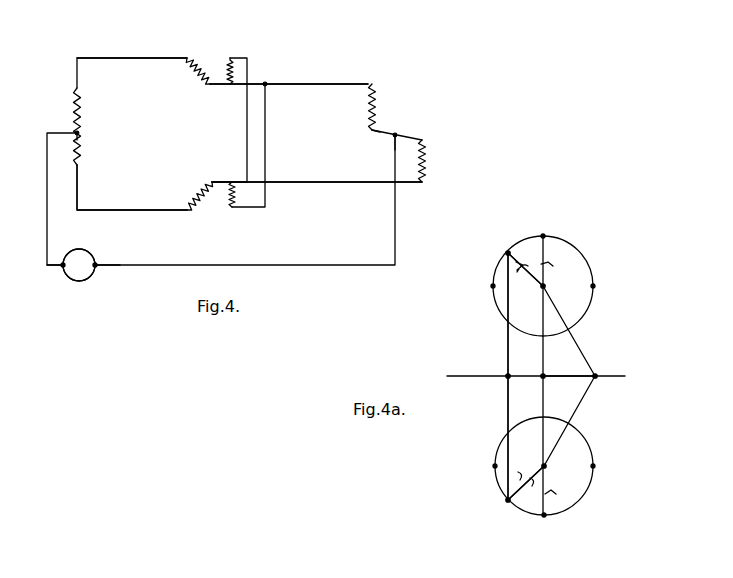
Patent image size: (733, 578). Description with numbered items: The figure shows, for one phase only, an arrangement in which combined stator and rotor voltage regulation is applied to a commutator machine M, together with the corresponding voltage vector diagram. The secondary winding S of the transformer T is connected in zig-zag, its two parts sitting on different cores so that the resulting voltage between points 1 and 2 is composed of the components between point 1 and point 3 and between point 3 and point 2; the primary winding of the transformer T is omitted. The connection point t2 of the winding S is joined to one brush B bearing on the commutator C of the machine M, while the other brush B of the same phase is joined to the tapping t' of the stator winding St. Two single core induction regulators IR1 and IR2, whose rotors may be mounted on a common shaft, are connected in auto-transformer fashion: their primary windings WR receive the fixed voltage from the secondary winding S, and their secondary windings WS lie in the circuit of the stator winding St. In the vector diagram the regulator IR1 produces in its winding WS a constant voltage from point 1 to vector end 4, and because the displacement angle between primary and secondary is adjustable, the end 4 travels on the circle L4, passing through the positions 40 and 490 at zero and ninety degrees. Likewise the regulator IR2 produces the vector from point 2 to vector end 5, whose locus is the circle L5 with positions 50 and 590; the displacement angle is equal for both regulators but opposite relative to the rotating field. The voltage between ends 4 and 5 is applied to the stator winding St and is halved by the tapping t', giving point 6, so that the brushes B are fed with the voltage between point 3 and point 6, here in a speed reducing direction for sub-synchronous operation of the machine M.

In FIG. 4, the single core induction regulator IR1 is at (225, 215).
In FIG. 4, the single core induction regulator IR2 is at (200, 124).
In FIG. 4, the secondary winding WS is at (189, 134).
In FIG. 4, the primary winding WR is at (222, 62).
In FIG. 4, the stator winding St is at (88, 126).
In FIG. 4, the transformer T is at (393, 115).
In FIG. 4, the secondary winding S is at (393, 133).
In FIG. 4, the tapping t' is at (63, 122).
In FIG. 4, the connection point t2 is at (401, 130).
In FIG. 4, the commutator machine M is at (79, 251).
In FIG. 4, the commutator C is at (79, 265).
In FIG. 4, the brush B is at (97, 270).
In FIG. 4, the voltage potential point 1 is at (316, 180).
In FIG. 4a, the voltage potential point 1 is at (538, 458).
In FIG. 4, the voltage potential point 2 is at (289, 85).
In FIG. 4a, the voltage potential point 2 is at (535, 291).
In FIG. 4, the voltage potential point 3 is at (105, 250).
In FIG. 4a, the voltage potential point 3 is at (575, 384).
In FIG. 4, the vector end 4 is at (132, 192).
In FIG. 4a, the vector end 4 is at (518, 494).
In FIG. 4, the vector end 5 is at (133, 67).
In FIG. 4a, the vector end 5 is at (517, 260).
In FIG. 4, the voltage potential point 6 is at (70, 195).
In FIG. 4a, the voltage potential point 6 is at (501, 376).
In FIG. 4a, the locus L5 is at (578, 257).
In FIG. 4a, the locus L4 is at (588, 490).
In FIG. 4a, the vector end position 50 is at (545, 226).
In FIG. 4a, the vector end position 590 is at (475, 288).
In FIG. 4a, the vector end position 40 is at (546, 526).
In FIG. 4a, the vector end position 490 is at (475, 466).